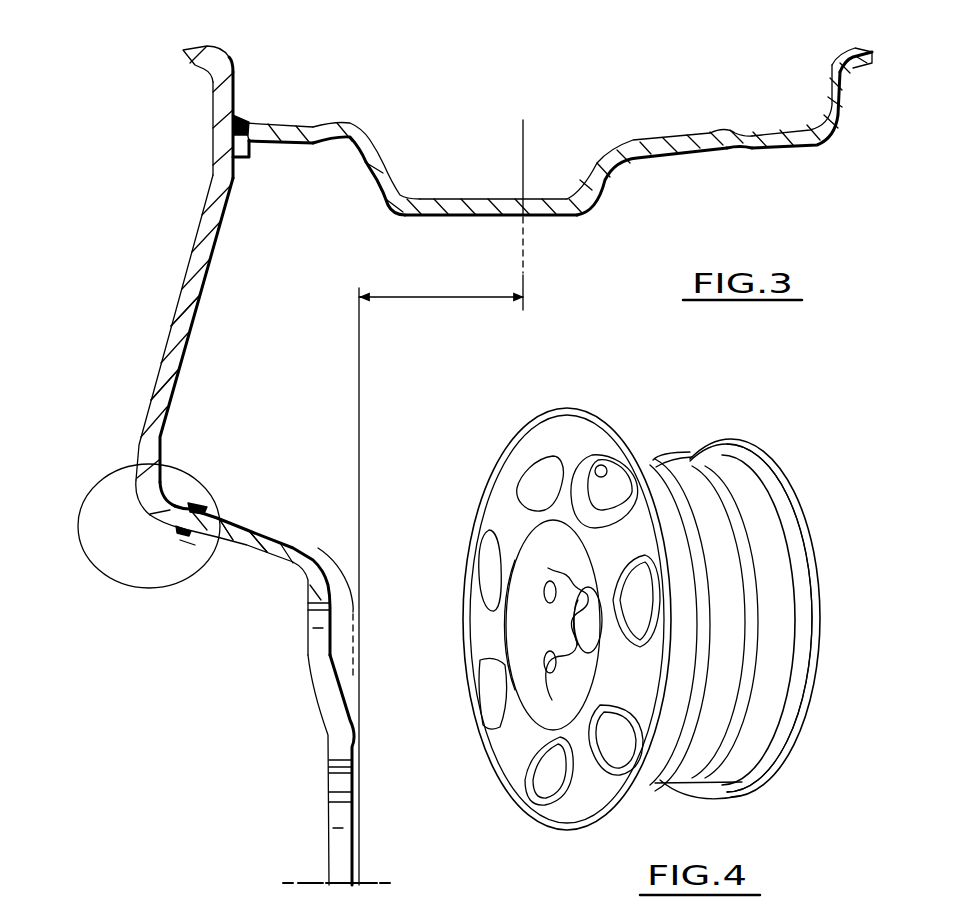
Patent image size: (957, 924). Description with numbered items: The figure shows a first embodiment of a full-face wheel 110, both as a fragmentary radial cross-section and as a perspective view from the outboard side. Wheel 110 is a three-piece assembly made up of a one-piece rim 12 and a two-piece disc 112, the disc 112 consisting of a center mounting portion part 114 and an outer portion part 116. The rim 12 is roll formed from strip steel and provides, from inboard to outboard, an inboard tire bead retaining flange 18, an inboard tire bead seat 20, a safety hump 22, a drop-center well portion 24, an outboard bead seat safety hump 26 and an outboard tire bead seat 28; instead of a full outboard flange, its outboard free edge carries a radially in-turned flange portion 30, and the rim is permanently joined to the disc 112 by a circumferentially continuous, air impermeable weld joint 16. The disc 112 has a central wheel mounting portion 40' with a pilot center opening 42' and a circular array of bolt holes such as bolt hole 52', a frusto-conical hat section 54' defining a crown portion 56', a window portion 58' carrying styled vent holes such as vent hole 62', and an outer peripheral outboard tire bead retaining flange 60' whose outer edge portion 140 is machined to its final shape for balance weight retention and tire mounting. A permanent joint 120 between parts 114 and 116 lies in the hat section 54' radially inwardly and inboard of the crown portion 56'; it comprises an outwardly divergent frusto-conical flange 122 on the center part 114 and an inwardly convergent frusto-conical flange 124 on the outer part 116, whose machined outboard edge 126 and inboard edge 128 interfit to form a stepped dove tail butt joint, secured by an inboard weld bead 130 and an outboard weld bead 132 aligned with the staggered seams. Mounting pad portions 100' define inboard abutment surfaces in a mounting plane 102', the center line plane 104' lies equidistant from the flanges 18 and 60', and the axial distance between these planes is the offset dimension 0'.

In FIG. 3, the rim 12 is at (636, 133).
In FIG. 4, the rim 12 is at (800, 486).
In FIG. 3, the weld joint 16 is at (243, 121).
In FIG. 3, the inboard tire bead retaining flange 18 is at (842, 53).
In FIG. 3, the inboard tire bead seat 20 is at (777, 130).
In FIG. 3, the safety hump 22 is at (730, 127).
In FIG. 3, the drop-center well portion 24 is at (477, 213).
In FIG. 3, the outboard bead seat safety hump 26 is at (322, 125).
In FIG. 3, the outboard tire bead seat 28 is at (284, 124).
In FIG. 3, the radially in-turned flange portion 30 is at (250, 153).
In FIG. 3, the wheel mounting portion 40' is at (363, 756).
In FIG. 3, the pilot center opening 42' is at (326, 821).
In FIG. 4, the pilot center opening 42' is at (610, 640).
In FIG. 4, the wheel mounting bolt hole 52' is at (593, 618).
In FIG. 3, the frusto-conical hat section 54' is at (144, 525).
In FIG. 3, the crown portion 56' is at (177, 465).
In FIG. 3, the window portion 58' is at (154, 308).
In FIG. 3, the outboard tire bead retaining flange 60' is at (191, 125).
In FIG. 4, the styled vent hole 62' is at (619, 465).
In FIG. 3, the offset dimension 0' is at (441, 281).
In FIG. 3, the mounting pad portion 100' is at (369, 614).
In FIG. 3, the mounting plane 102' is at (325, 569).
In FIG. 3, the center line plane 104' is at (557, 215).
In FIG. 3, the wheel 110 is at (489, 104).
In FIG. 4, the wheel 110 is at (767, 436).
In FIG. 3, the two-piece disc 112 is at (201, 215).
In FIG. 4, the two-piece disc 112 is at (486, 478).
In FIG. 3, the center mounting portion part 114 is at (303, 585).
In FIG. 4, the center mounting portion part 114 is at (525, 574).
In FIG. 3, the outer portion part 116 is at (150, 390).
In FIG. 3, the joint 120 is at (216, 499).
In FIG. 3, the outwardly divergent frusto-conical flange 122 is at (258, 542).
In FIG. 3, the inwardly convergent frusto-conical flange 124 is at (160, 527).
In FIG. 3, the outboard edge 126 is at (158, 516).
In FIG. 3, the inboard edge 128 is at (216, 518).
In FIG. 3, the inboard weld bead 130 is at (196, 502).
In FIG. 3, the outboard weld bead 132 is at (183, 543).
In FIG. 4, the outboard weld bead 132 is at (500, 648).
In FIG. 3, the outer edge portion 140 is at (202, 46).